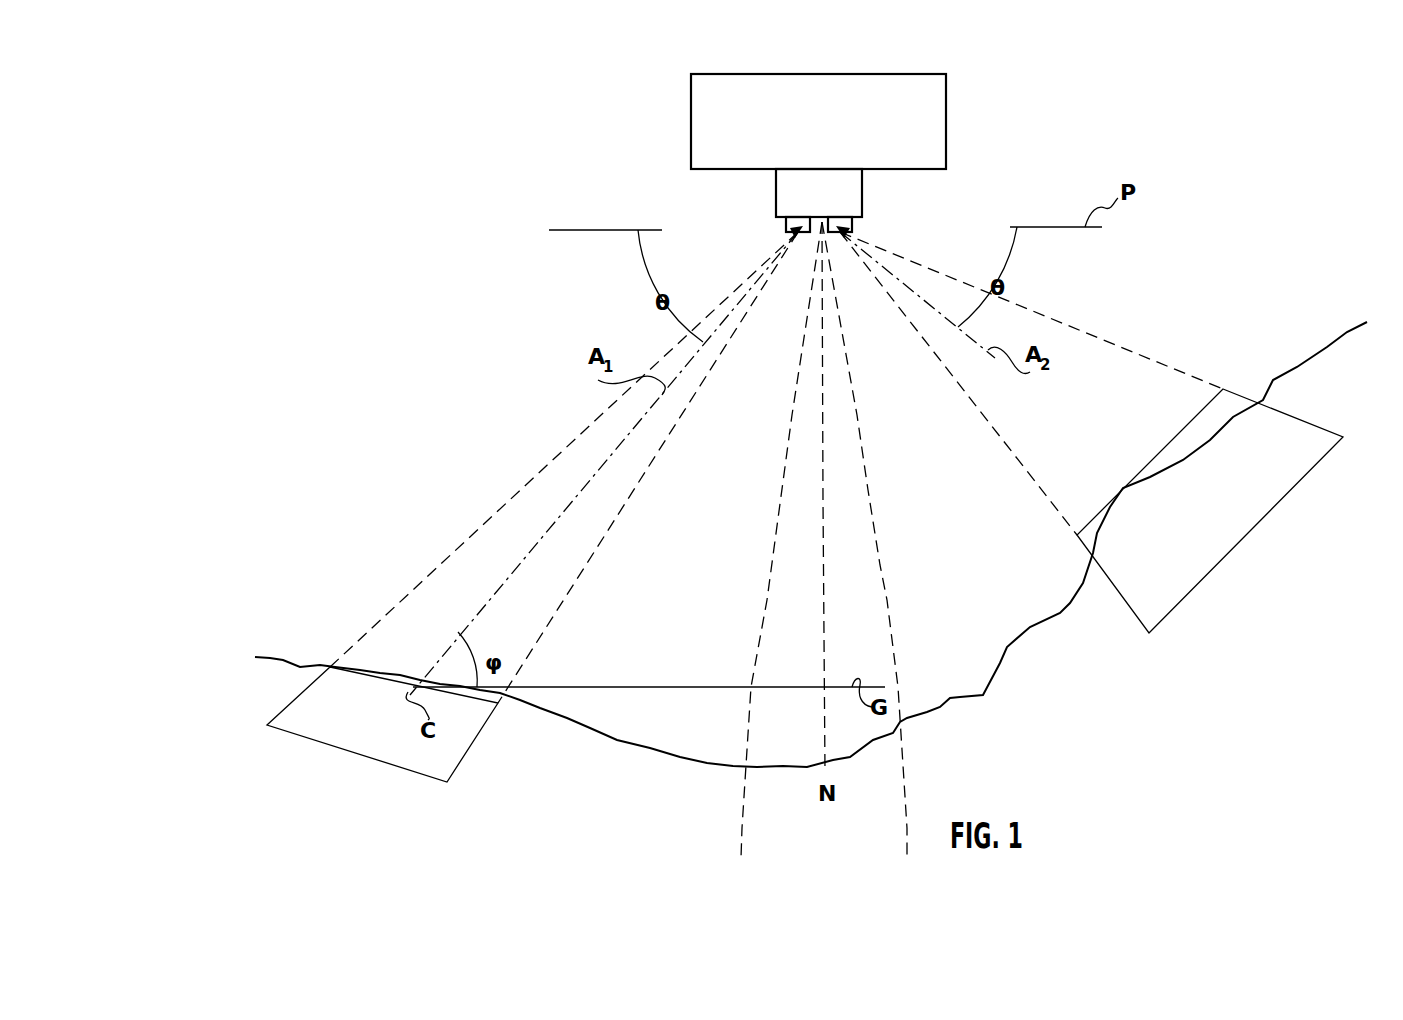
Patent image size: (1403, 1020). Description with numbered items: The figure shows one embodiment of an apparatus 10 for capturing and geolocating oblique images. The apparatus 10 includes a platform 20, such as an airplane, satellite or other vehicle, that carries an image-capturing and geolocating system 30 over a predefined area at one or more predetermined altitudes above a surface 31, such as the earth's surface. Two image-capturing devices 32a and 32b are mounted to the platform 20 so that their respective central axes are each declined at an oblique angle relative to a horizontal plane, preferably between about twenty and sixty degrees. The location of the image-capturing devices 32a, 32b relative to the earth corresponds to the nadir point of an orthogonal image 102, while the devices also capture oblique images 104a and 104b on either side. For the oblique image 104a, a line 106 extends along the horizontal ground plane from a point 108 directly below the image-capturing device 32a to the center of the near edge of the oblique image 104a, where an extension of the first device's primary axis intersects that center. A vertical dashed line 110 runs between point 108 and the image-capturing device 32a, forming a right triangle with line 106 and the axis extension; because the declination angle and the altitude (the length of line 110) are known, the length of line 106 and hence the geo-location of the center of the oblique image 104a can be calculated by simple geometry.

The apparatus 10 is at (881, 144).
The platform 20 is at (937, 153).
The image-capturing and geolocating system 30 is at (852, 202).
The surface 31 is at (305, 660).
The image-capturing device 32a is at (786, 223).
The image-capturing device 32b is at (852, 223).
The orthogonal image 102 is at (907, 828).
The oblique image 104a is at (455, 762).
The oblique image 104b is at (1155, 615).
The line 106 is at (677, 687).
The point 108 is at (350, 677).
The vertical line 110 is at (824, 533).